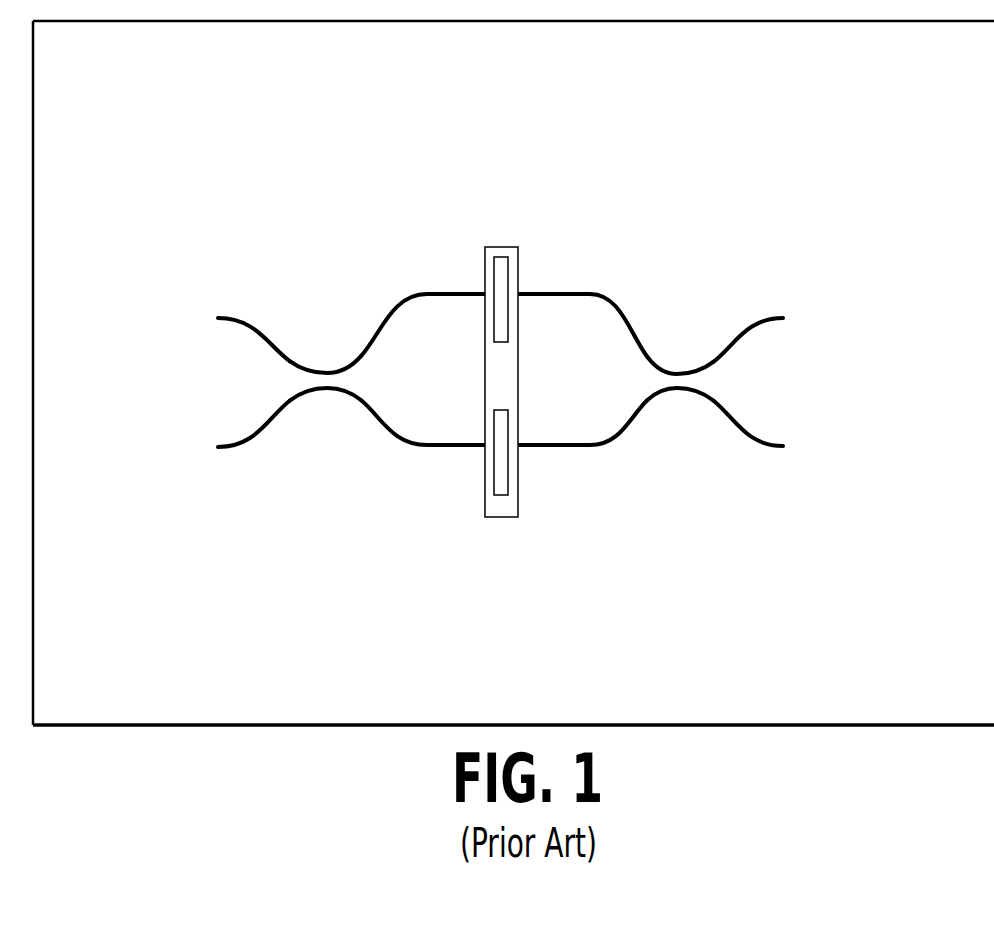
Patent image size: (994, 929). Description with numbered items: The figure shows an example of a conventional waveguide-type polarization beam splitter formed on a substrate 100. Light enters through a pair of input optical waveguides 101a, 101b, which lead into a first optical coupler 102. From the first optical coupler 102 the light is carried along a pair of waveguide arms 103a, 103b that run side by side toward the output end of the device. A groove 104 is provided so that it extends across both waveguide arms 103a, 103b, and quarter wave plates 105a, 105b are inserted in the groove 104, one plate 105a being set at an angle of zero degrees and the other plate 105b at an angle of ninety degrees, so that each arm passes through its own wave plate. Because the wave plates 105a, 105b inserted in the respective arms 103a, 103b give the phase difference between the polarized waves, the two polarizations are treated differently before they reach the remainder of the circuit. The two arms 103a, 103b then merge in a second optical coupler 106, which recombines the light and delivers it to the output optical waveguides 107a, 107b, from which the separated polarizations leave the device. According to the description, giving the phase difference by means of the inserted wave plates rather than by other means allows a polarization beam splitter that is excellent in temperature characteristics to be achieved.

The substrate 100 is at (86, 727).
The input optical waveguide 101a is at (212, 329).
The input optical waveguide 101b is at (225, 431).
The first optical coupler 102 is at (318, 390).
The waveguide arm 103a is at (372, 333).
The waveguide arm 103b is at (370, 410).
The groove 104 is at (497, 247).
The quarter wave plate 105a is at (507, 273).
The quarter wave plate 105b is at (507, 495).
The second optical coupler 106 is at (675, 390).
The output optical waveguide 107a is at (785, 331).
The output optical waveguide 107b is at (785, 445).